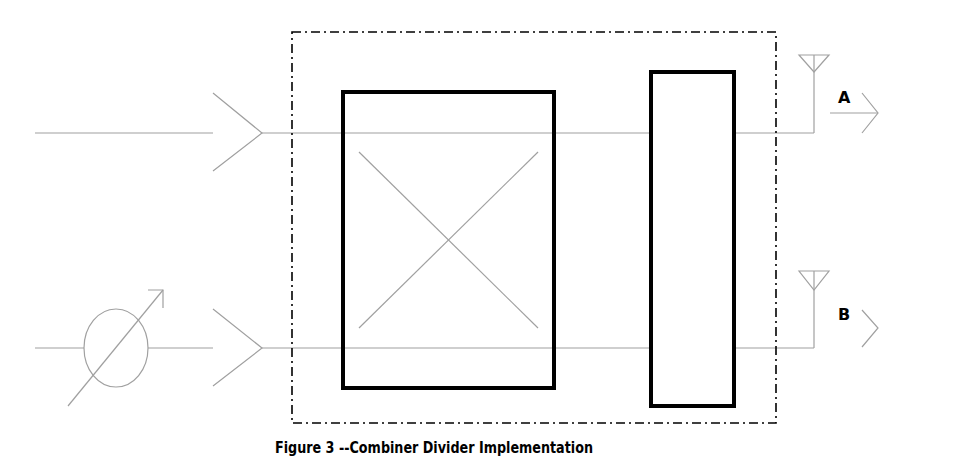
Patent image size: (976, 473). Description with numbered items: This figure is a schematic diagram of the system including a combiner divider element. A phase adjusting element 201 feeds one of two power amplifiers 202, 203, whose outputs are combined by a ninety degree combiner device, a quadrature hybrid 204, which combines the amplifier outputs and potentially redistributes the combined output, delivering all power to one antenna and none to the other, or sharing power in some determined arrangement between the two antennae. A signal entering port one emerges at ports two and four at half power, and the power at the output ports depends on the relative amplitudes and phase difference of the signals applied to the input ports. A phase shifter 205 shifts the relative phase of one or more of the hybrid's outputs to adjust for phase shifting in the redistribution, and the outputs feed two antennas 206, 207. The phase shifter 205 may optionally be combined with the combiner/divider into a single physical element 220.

The phase element 201 is at (115, 344).
The amplifier 202 is at (237, 119).
The amplifier 203 is at (237, 334).
The hybrid 204 is at (448, 228).
The phase shifter 205 is at (692, 226).
The antenna A 206 is at (813, 84).
The antenna B 207 is at (813, 299).
The optional element 220 is at (534, 218).